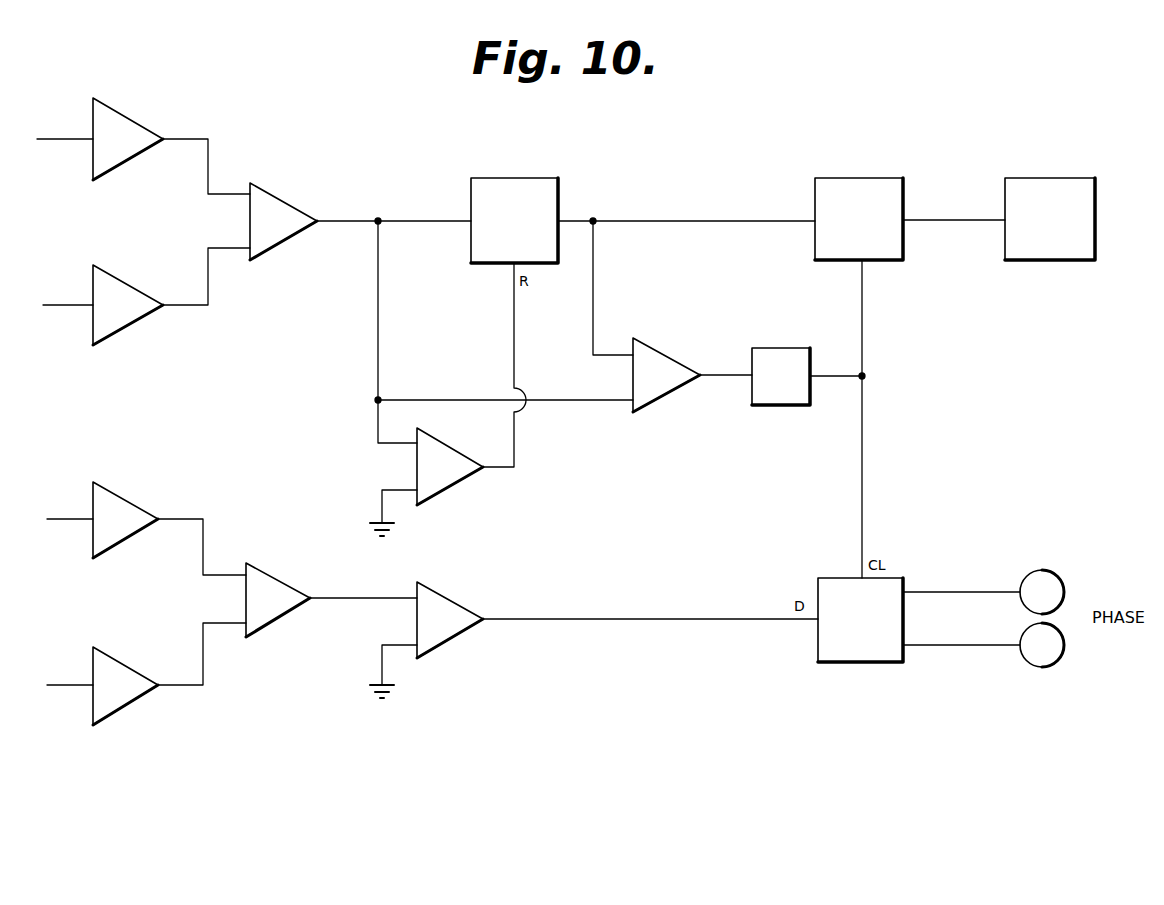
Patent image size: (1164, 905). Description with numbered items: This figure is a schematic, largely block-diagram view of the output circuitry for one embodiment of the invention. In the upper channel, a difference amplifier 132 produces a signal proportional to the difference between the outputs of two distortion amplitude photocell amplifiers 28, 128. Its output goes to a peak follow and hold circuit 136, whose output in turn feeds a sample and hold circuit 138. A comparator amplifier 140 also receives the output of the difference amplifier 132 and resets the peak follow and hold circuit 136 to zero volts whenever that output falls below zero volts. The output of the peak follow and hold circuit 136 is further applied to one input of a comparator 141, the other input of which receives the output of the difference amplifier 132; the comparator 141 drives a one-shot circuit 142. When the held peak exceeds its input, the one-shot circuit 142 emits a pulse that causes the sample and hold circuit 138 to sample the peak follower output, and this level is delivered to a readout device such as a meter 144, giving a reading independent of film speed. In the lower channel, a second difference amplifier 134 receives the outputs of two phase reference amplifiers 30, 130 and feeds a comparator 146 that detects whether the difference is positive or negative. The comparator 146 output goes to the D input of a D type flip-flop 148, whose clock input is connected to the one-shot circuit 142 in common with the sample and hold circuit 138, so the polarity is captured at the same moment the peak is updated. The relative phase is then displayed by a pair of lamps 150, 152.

The distortion amplitude photocell amplifier 128 is at (125, 120).
The distortion amplitude photocell amplifier 28 is at (122, 325).
The difference amplifier 132 is at (298, 213).
The peak follow and hold circuit 136 is at (548, 180).
The sample and hold circuit 138 is at (840, 180).
The meter 144 is at (1085, 180).
The comparator 141 is at (686, 300).
The one-shot circuit 142 is at (790, 407).
The comparator amplifier 140 is at (467, 478).
The phase reference amplifier 30 is at (130, 508).
The phase reference amplifier 130 is at (122, 695).
The difference amplifier 134 is at (290, 606).
The comparator 146 is at (455, 633).
The D type flip-flop 148 is at (820, 655).
The lamp 150 is at (1050, 575).
The lamp 152 is at (1033, 660).